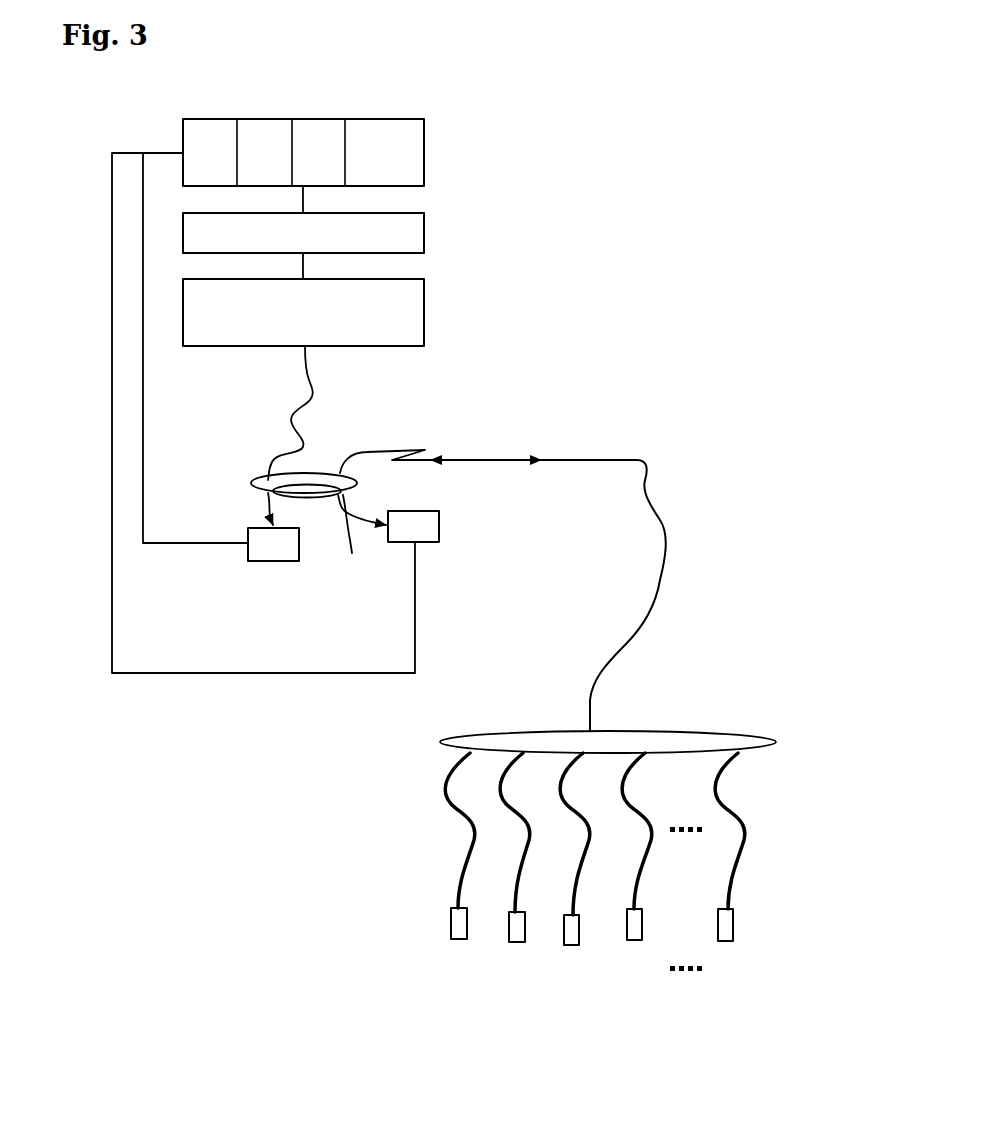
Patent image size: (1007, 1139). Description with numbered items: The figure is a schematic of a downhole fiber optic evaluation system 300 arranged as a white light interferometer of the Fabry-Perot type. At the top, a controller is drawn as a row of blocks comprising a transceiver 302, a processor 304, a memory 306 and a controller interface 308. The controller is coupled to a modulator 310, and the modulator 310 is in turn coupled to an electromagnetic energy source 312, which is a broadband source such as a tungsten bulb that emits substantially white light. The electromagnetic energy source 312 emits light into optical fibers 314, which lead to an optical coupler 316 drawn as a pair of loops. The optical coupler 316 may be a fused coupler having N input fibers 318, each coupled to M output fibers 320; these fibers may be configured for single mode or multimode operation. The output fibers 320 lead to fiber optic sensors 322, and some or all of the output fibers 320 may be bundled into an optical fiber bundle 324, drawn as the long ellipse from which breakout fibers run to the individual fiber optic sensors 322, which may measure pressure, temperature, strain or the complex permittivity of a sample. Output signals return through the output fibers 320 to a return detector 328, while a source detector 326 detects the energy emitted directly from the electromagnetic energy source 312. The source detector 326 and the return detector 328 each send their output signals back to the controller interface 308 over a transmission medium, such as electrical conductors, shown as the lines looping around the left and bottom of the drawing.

The downhole fiber optic evaluation system 300 is at (606, 241).
The transceiver 302 is at (424, 160).
The processor 304 is at (333, 119).
The memory 306 is at (263, 119).
The controller interface 308 is at (203, 119).
The modulator 310 is at (424, 240).
The electromagnetic energy source 312 is at (424, 315).
The optical fibers 314 is at (316, 398).
The optical coupler 316 is at (312, 477).
The input fibers 318 is at (275, 447).
The output fibers 320 is at (268, 510).
The fiber optic sensors 322 is at (764, 953).
The optical fiber bundle 324 is at (637, 731).
The source detector 326 is at (248, 551).
The return detector 328 is at (165, 153).